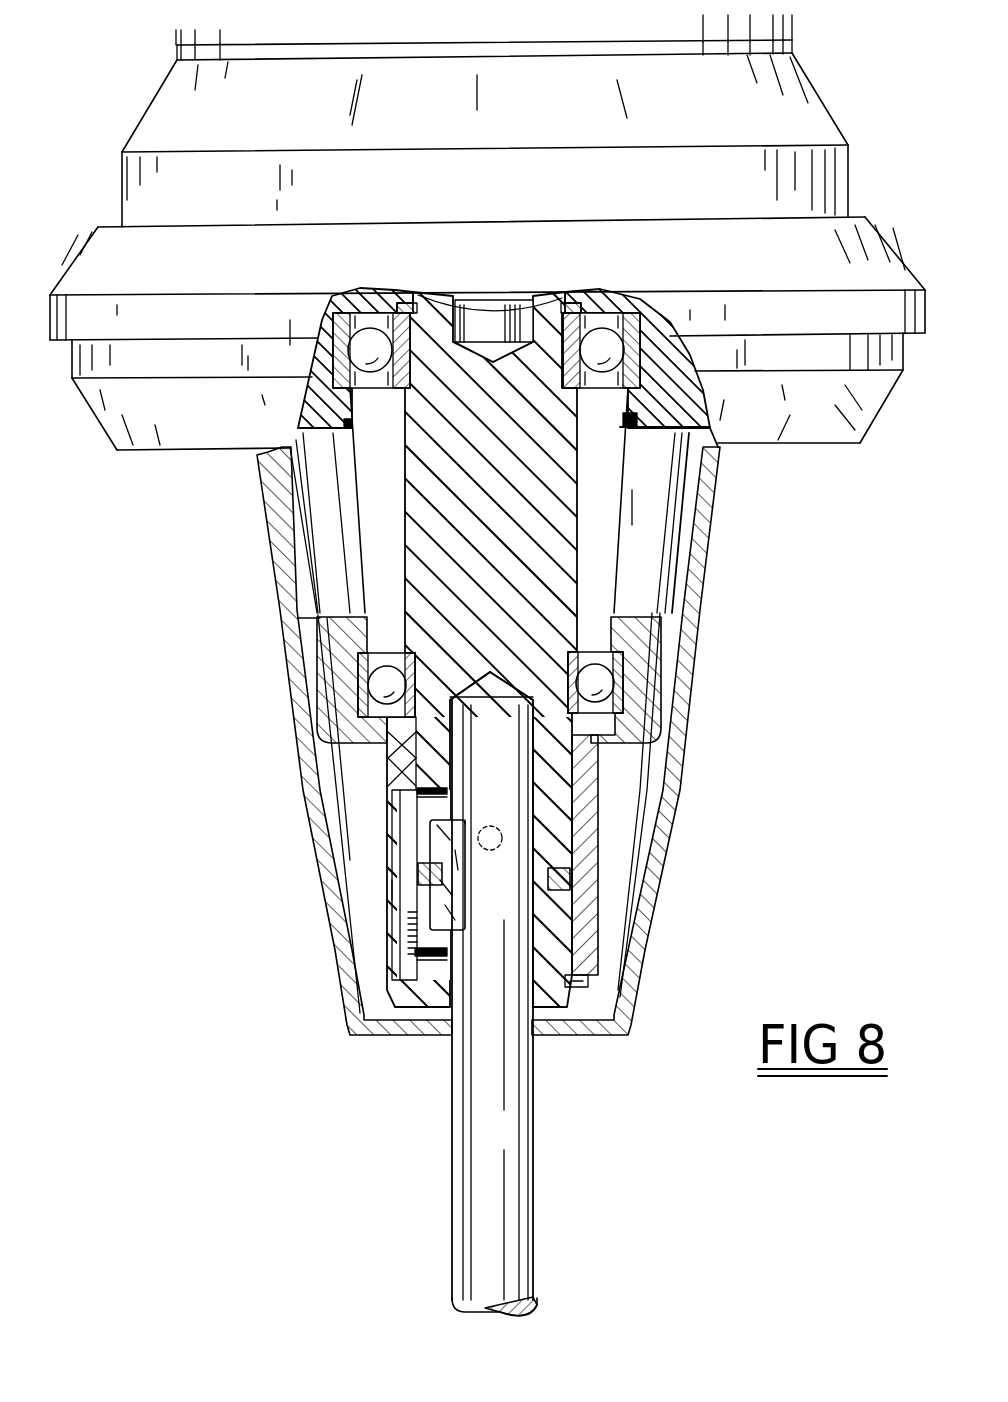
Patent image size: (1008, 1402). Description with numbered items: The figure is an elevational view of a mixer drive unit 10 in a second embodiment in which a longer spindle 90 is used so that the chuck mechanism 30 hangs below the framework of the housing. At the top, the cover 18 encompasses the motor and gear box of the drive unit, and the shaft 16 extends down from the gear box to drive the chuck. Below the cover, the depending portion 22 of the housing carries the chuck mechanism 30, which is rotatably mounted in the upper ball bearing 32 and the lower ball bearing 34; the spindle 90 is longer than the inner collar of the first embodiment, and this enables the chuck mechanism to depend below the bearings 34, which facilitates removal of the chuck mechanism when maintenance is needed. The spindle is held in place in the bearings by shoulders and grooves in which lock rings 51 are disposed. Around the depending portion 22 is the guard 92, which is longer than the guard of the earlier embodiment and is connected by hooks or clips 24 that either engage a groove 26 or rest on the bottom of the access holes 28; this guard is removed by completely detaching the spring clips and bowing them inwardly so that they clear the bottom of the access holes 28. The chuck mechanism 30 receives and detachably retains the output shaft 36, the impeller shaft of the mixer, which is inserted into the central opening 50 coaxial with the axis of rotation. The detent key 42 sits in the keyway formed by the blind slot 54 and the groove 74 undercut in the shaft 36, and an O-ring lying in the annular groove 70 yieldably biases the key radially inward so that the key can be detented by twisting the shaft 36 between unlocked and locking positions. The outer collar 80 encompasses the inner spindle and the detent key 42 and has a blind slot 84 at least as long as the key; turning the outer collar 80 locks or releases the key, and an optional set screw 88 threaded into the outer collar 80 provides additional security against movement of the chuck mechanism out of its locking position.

The mixer drive unit 10 is at (162, 125).
The cover 18 is at (490, 83).
The shaft 16 is at (490, 305).
The ball bearing 32 is at (450, 345).
The groove 26 is at (348, 425).
The hooks or clips 24 is at (633, 428).
The spindle 90 is at (412, 522).
The access holes 28 is at (325, 557).
The depending portion 22 is at (333, 633).
The guard 92 is at (643, 741).
The ball bearing 34 is at (380, 685).
The central opening 50 is at (479, 676).
The blind slot 54 is at (415, 790).
The blind slot 84 is at (354, 872).
The chuck mechanism 30 is at (282, 905).
The detent key 42 is at (353, 910).
The groove 74 is at (468, 822).
The set screw 88 is at (482, 849).
The outer collar 80 is at (597, 830).
The annular groove 70 is at (628, 889).
The lock rings 51 is at (590, 983).
The output shaft 36 is at (535, 1180).